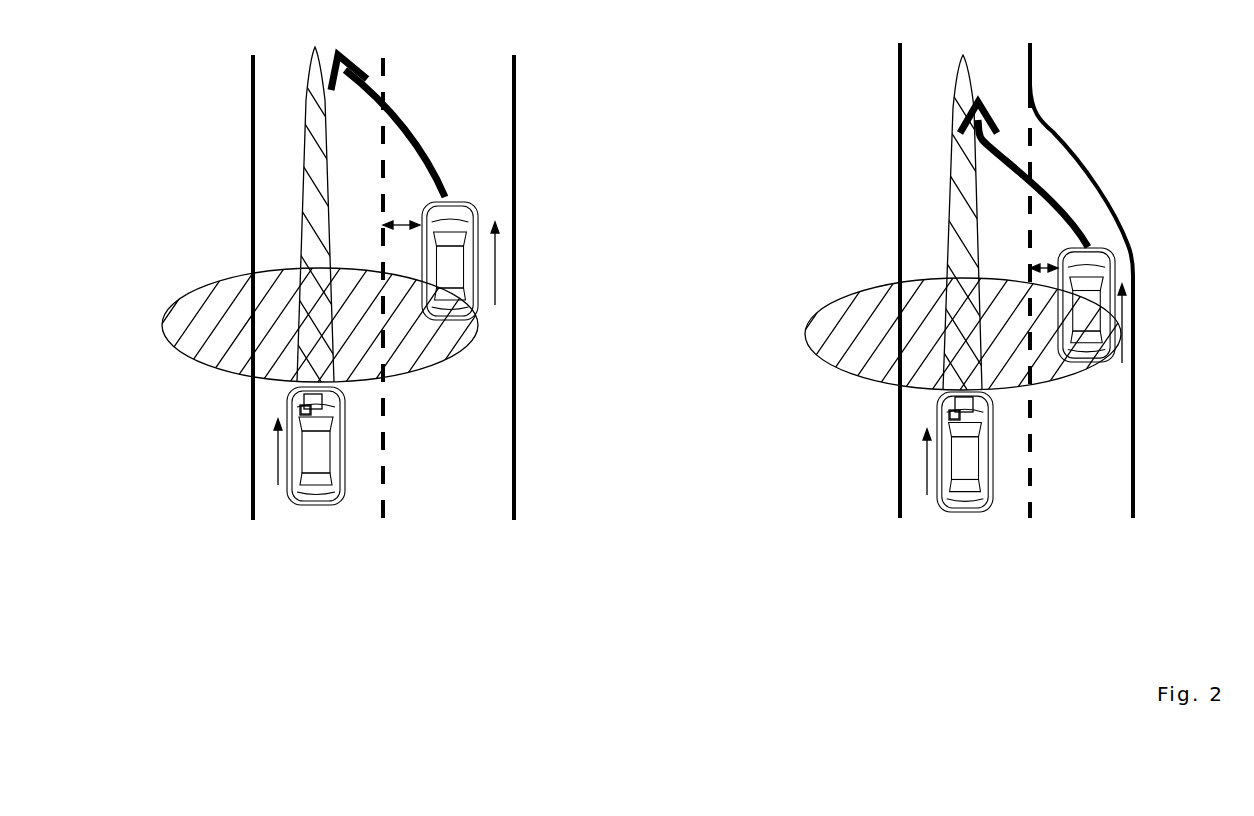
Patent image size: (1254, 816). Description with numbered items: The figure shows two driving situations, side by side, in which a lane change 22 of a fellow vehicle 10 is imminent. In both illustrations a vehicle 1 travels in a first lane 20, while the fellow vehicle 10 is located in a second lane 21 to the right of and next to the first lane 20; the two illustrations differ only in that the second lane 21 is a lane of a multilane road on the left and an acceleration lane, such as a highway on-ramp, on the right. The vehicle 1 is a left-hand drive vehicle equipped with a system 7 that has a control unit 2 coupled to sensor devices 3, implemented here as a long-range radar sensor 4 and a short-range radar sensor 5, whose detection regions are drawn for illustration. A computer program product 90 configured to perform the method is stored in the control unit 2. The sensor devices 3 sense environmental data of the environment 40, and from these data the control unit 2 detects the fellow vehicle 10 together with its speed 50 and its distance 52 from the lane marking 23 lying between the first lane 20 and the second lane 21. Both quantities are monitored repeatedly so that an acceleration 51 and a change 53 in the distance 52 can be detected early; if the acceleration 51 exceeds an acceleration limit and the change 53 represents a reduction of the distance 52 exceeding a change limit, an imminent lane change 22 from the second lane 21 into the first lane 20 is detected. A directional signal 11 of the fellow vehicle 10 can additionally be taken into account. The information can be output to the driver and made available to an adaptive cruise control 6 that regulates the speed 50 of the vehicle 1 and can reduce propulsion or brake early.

The vehicle 1 is at (364, 473).
The control unit 2 is at (695, 419).
The sensor devices 3 is at (659, 241).
The long-range radar sensor 4 is at (305, 215).
The short-range radar sensor 5 is at (190, 308).
The adaptive cruise control 6 is at (307, 410).
The system 7 is at (282, 393).
The fellow vehicle 10 is at (486, 212).
The directional signal 11 is at (427, 322).
The first lane 20 is at (318, 538).
The second lane 21 is at (452, 538).
The lane change 22 is at (350, 57).
The lane marking 23 is at (384, 98).
The environment 40 is at (367, 195).
The speed 50 is at (278, 460).
The acceleration 51 is at (495, 272).
The distance 52 is at (759, 189).
The change in the distance 53 is at (402, 222).
The computer program product 90 is at (325, 395).